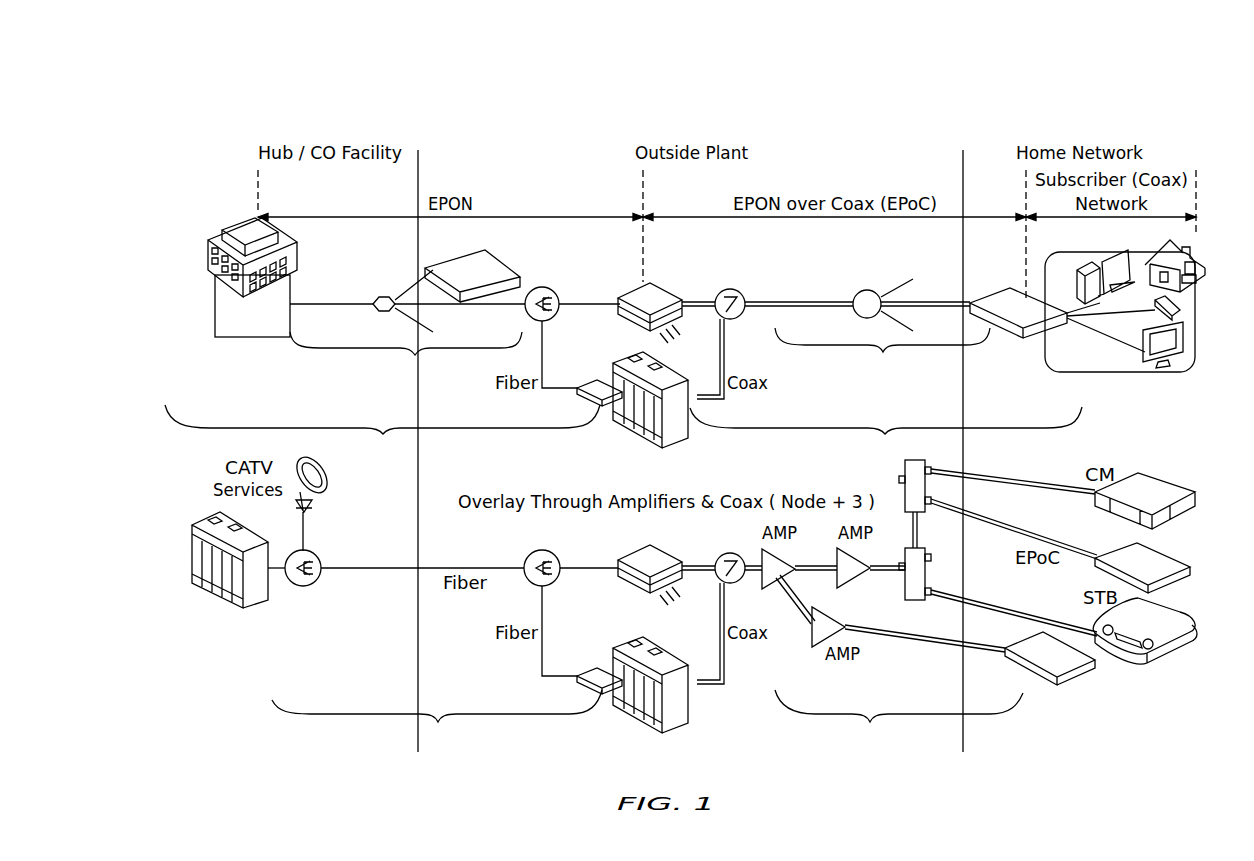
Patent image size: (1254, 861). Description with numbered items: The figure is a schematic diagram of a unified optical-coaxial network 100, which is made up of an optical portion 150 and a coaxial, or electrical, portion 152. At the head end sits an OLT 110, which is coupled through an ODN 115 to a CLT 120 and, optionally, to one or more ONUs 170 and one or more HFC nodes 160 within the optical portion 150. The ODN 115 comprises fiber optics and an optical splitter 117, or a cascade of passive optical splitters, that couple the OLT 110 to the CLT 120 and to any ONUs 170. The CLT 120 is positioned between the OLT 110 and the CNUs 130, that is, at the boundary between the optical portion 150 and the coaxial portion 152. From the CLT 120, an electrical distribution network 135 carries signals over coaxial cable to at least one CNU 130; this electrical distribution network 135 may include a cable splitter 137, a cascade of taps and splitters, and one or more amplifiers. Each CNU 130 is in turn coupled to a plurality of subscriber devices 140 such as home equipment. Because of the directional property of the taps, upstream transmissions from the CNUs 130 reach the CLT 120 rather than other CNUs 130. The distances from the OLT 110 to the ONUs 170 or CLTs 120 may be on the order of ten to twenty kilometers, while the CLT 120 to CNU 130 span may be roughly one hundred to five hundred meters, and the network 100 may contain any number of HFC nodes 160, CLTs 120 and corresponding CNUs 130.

The unified optical-coaxial network 100 is at (130, 186).
The optical line terminal (OLT) 110 is at (216, 435).
The optical distribution network (ODN) 115 is at (437, 541).
The optical splitter 117 is at (450, 412).
The coaxial line terminal (CLT) 120 is at (651, 545).
The coaxial network unit (CNU) 130 is at (1098, 483).
The electrical distribution network (EDN) 135 is at (899, 539).
The cable splitter 137 is at (860, 294).
The subscriber device 140 is at (1139, 298).
The optical portion 150 is at (382, 431).
The coaxial portion 152 is at (886, 433).
The HFC node 160 is at (649, 437).
The optical network unit (ONU) 170 is at (488, 264).